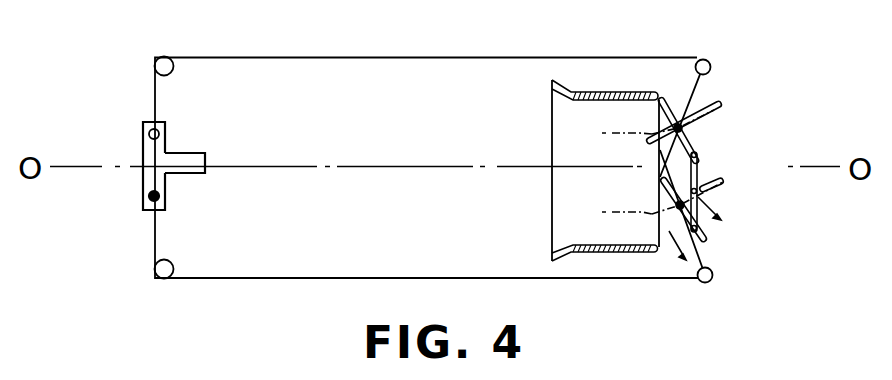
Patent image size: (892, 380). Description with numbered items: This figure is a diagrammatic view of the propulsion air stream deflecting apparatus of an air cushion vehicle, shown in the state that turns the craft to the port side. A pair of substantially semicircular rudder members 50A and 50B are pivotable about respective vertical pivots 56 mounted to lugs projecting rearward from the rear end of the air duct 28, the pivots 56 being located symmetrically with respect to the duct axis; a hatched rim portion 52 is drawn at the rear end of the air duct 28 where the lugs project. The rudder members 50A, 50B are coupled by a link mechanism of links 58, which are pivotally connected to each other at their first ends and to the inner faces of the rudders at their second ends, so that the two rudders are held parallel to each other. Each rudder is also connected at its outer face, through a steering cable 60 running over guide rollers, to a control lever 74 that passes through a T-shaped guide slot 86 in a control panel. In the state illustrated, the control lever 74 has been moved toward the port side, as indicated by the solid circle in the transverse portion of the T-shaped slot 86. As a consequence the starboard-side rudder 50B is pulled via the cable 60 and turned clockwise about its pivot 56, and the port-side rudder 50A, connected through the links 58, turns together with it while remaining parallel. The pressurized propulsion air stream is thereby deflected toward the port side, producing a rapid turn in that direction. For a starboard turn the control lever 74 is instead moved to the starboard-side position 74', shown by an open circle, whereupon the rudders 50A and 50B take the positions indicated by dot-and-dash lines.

The steering cable 60 is at (382, 57).
The air duct 28 is at (595, 92).
The seal ring 52 is at (636, 92).
The vertical pivot 56 is at (697, 99).
The starboard-side rudder member 50B is at (690, 143).
The link 58 is at (699, 178).
The port-side rudder member 50A is at (703, 239).
The control lever 74 is at (126, 174).
The starboard-side position of control lever 74' is at (188, 120).
The T-shaped guide slot 86 is at (204, 172).